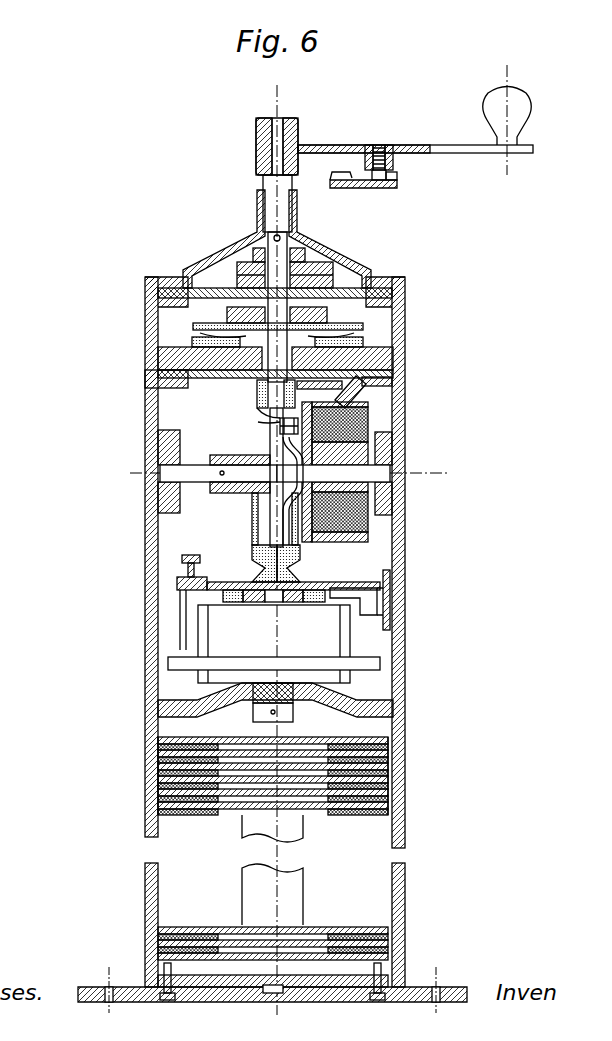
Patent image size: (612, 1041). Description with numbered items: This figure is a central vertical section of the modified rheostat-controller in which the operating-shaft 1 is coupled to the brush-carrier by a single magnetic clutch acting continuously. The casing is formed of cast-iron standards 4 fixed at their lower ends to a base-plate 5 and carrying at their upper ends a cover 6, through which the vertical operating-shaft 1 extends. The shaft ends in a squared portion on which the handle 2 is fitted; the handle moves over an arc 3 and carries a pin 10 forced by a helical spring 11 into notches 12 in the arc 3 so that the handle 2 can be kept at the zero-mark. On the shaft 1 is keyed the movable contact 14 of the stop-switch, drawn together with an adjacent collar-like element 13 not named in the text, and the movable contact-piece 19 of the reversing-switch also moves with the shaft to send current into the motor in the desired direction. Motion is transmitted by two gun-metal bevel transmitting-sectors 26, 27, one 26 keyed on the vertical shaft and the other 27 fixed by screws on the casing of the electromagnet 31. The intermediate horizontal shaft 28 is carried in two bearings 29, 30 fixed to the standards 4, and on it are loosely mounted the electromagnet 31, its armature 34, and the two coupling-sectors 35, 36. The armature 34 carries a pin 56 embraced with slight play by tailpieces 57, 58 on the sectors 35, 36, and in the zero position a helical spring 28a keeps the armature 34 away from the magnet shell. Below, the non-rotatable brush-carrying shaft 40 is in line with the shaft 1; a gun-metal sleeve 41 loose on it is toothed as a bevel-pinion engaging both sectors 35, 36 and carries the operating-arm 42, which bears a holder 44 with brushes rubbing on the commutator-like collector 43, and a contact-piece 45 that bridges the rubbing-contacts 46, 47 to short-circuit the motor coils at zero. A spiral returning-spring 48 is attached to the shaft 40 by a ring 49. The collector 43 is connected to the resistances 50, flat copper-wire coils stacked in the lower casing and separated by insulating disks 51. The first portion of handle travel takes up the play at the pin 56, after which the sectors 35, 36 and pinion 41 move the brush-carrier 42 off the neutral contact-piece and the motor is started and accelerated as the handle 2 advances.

The operating-shaft 1 is at (277, 278).
The handle 2 is at (394, 131).
The arc 3 is at (363, 179).
The standards 4 is at (145, 343).
The base-plate 5 is at (109, 990).
The cover 6 is at (332, 252).
The pin 10 is at (383, 146).
The helical spring 11 is at (372, 148).
The notches 12 is at (397, 183).
The collar 13 is at (295, 275).
The movable contact 14 is at (288, 255).
The movable contact-piece of the reversing-switch 19 is at (338, 324).
The transmitting-sector 26 is at (319, 388).
The transmitting-sector 27 is at (366, 400).
The intermediate horizontal shaft 28 is at (218, 474).
The helical spring 28a is at (333, 473).
The bearing 29 is at (178, 471).
The bearing 30 is at (392, 442).
The electromagnet 31 is at (368, 541).
The armature 34 is at (297, 491).
The coupling-sector 35 is at (281, 477).
The coupling-sector 36 is at (252, 521).
The brush-carrying shaft 40 is at (256, 562).
The sleeve 41 is at (298, 568).
The operating-arm 42 is at (240, 590).
The collector 43 is at (228, 630).
The holder 44 is at (178, 590).
The contact-piece 45 is at (358, 585).
The rubbing-contact 46 is at (390, 584).
The rubbing-contact 47 is at (385, 618).
The returning-spring 48 is at (318, 602).
The ring 49 is at (290, 602).
The resistances 50 is at (200, 748).
The disks 51 is at (318, 748).
The pin 56 is at (280, 432).
The tailpiece 57 is at (258, 422).
The tailpiece 58 is at (265, 399).